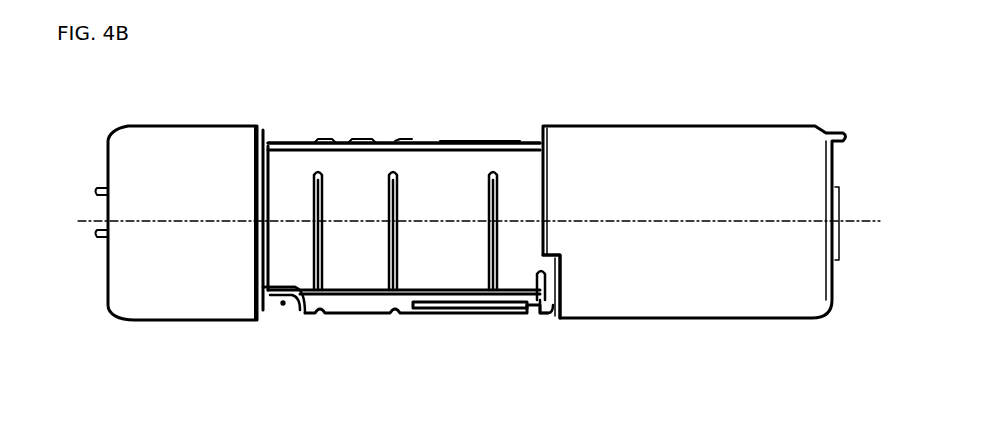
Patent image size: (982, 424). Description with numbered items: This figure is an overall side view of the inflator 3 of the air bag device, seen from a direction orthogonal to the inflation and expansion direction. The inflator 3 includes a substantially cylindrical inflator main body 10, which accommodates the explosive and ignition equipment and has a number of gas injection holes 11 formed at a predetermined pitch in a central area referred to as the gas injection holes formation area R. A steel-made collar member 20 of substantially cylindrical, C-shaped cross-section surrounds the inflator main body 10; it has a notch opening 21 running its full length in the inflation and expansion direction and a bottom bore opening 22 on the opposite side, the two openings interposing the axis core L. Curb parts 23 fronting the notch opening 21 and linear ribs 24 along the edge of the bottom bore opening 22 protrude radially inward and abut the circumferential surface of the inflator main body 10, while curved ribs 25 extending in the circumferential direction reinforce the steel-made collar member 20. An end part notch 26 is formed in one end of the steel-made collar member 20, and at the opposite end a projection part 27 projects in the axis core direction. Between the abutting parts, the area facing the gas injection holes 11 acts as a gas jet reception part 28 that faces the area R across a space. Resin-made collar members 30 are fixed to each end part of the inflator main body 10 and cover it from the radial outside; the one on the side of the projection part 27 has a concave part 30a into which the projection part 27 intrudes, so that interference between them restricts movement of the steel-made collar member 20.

The inflator 3 is at (829, 100).
The inflator main body 10 is at (312, 141).
The gas injection holes 11 is at (285, 306).
The steel-made collar member 20 is at (346, 316).
The notch opening 21 is at (519, 142).
The bottom bore opening 22 is at (462, 310).
The curb parts 23 is at (397, 147).
The linear ribs 24 is at (462, 294).
The curved ribs 25 is at (322, 226).
The end part notch 26 is at (279, 301).
The projection part 27 is at (554, 314).
The gas jet reception part 28 is at (455, 170).
The resin-made collar member 30 is at (172, 158).
The concave part 30a is at (566, 272).
The axis core L is at (868, 219).
The gas injection holes formation area R is at (545, 326).